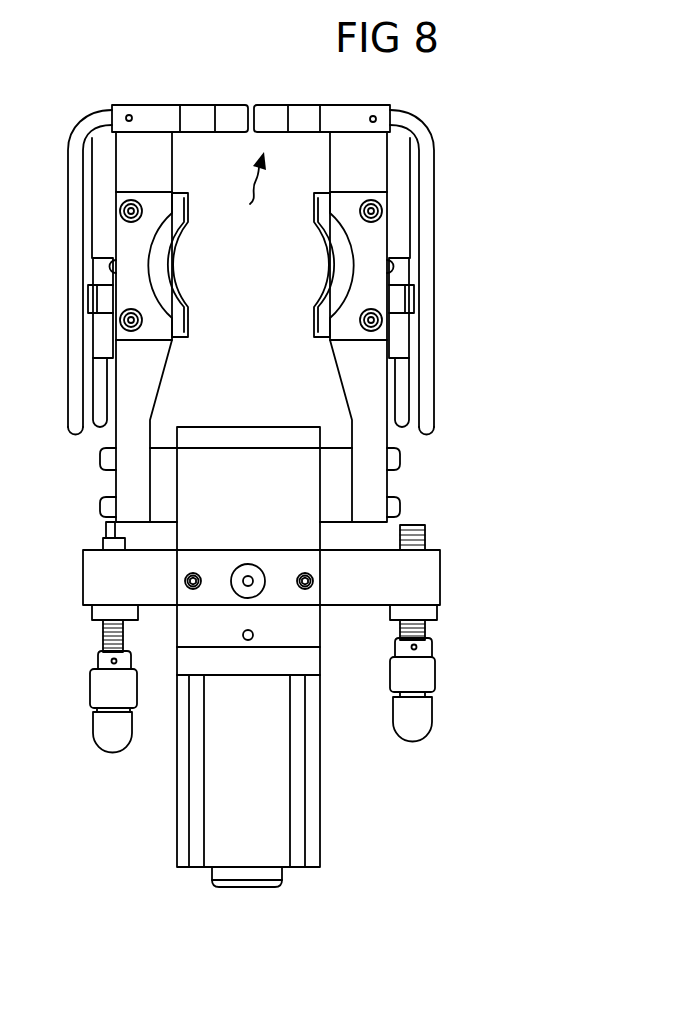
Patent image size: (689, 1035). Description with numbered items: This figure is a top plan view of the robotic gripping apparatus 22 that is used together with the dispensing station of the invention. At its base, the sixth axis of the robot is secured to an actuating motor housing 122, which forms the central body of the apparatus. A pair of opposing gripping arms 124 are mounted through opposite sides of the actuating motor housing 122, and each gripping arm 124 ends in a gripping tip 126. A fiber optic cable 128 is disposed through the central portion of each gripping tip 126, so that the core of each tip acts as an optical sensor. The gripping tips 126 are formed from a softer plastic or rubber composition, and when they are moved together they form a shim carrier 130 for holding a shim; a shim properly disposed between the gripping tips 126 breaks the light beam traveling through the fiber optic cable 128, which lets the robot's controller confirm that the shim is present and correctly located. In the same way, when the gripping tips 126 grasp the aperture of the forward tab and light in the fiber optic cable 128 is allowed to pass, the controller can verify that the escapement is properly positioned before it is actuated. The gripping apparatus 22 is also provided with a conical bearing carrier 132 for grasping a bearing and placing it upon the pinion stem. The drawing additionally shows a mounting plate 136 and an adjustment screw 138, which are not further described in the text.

The robotic gripping apparatus 22 is at (145, 782).
The actuating motor housing 122 is at (278, 825).
The gripping arms 124 is at (157, 352).
The gripping tip 126 is at (243, 110).
The fiber optic cable 128 is at (70, 149).
The shim carrier 130 is at (239, 189).
The conical bearing carrier 132 is at (185, 265).
The mounting plate 136 is at (103, 543).
The adjustment screw 138 is at (425, 530).